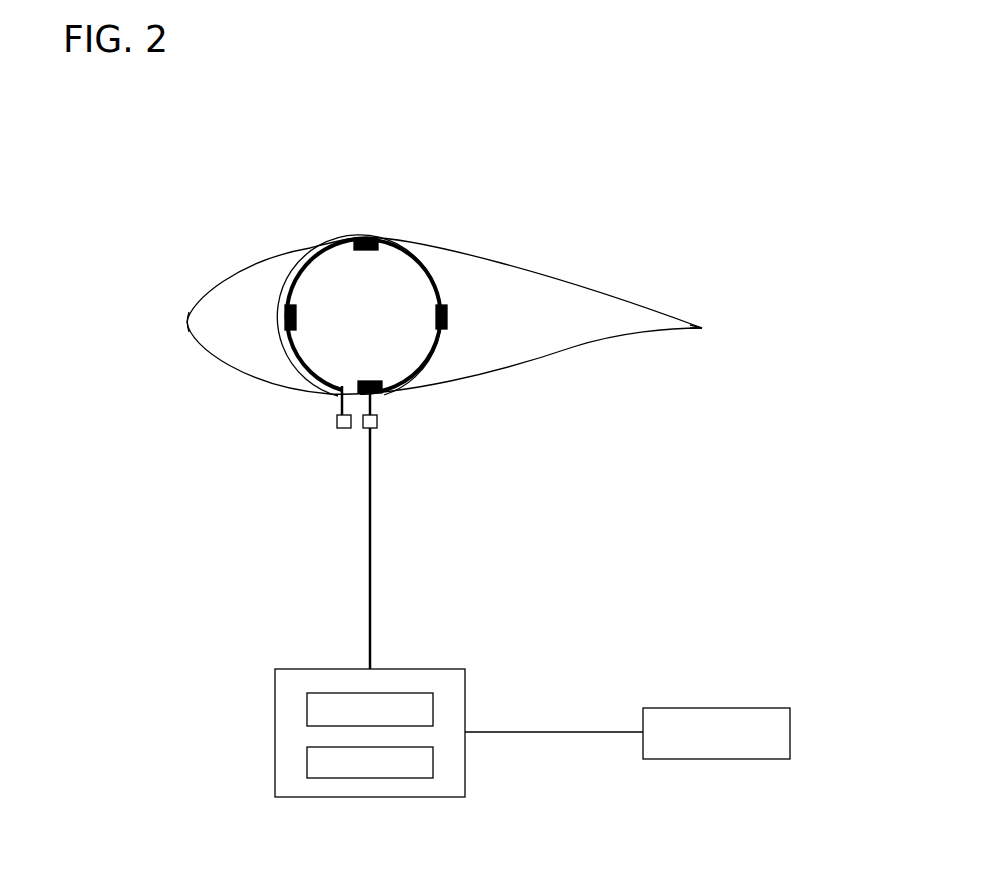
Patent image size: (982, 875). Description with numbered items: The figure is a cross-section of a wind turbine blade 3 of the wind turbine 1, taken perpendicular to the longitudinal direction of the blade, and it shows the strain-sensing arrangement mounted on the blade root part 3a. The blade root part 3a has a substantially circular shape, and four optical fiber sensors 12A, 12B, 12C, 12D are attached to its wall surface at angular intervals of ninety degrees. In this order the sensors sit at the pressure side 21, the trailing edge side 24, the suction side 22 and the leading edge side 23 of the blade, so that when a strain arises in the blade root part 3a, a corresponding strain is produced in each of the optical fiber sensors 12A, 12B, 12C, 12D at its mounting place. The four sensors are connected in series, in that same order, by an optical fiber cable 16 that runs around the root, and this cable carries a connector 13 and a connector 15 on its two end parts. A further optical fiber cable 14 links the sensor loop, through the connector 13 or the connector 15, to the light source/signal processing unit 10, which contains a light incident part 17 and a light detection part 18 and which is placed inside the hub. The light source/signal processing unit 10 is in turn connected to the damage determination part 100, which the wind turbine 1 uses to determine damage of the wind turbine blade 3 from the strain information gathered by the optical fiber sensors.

The wind turbine 1 is at (578, 144).
The wind turbine blade 3 is at (560, 272).
The blade root part 3a is at (288, 266).
The light source/signal processing unit 10 is at (275, 712).
The optical fiber sensor 12A is at (382, 393).
The optical fiber sensor 12B is at (447, 318).
The optical fiber sensor 12C is at (366, 238).
The optical fiber sensor 12D is at (285, 316).
The connector 13 is at (377, 428).
The optical fiber cable 14 is at (372, 520).
The connector 15 is at (337, 428).
The optical fiber cable 16 is at (426, 250).
The light incident part 17 is at (433, 708).
The light detection part 18 is at (433, 762).
The pressure side 21 is at (431, 432).
The suction side 22 is at (471, 219).
The leading edge side 23 is at (168, 351).
The trailing edge side 24 is at (714, 349).
The damage determination part 100 is at (718, 708).